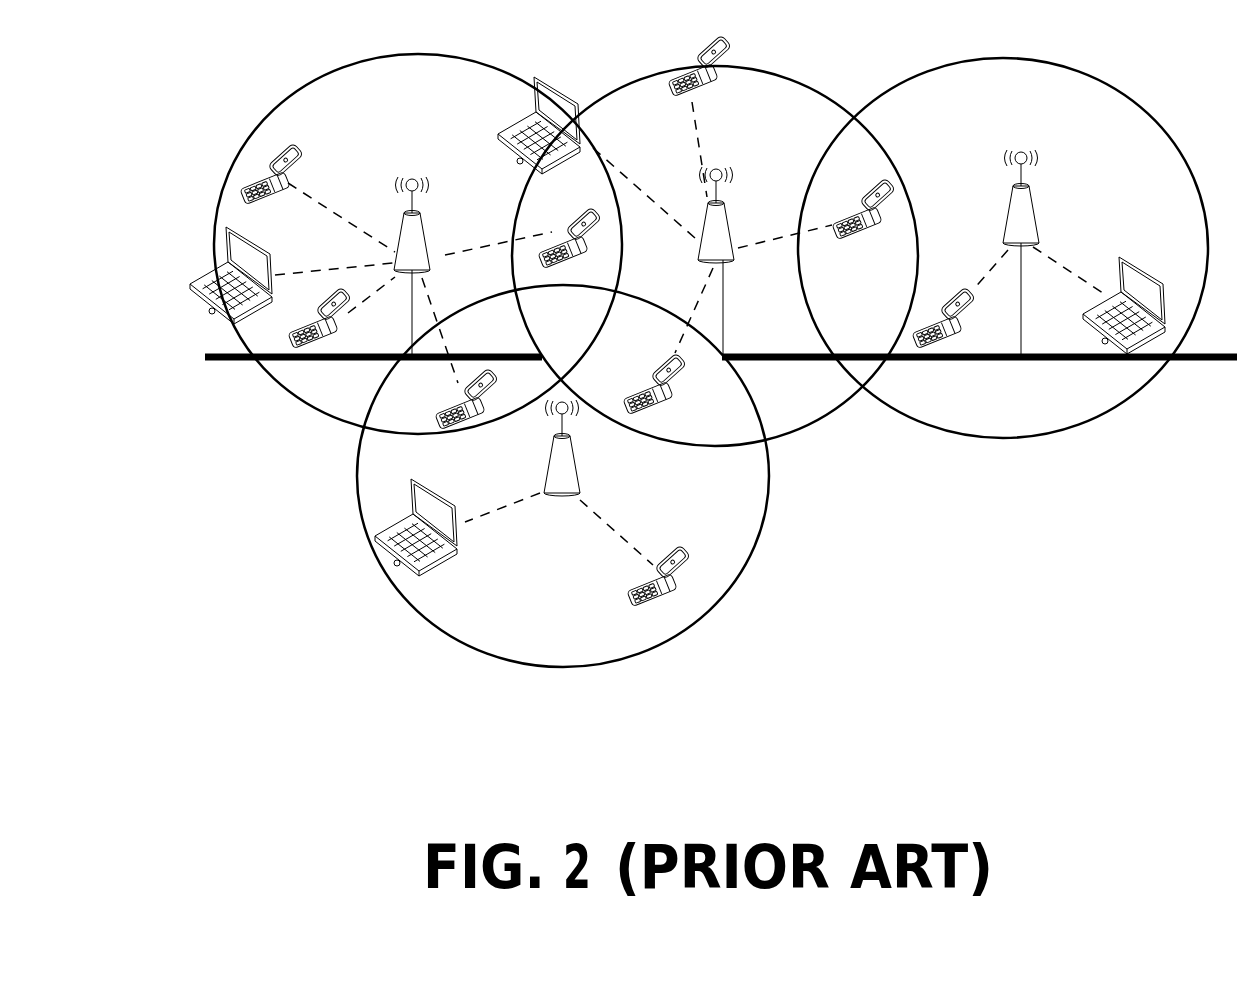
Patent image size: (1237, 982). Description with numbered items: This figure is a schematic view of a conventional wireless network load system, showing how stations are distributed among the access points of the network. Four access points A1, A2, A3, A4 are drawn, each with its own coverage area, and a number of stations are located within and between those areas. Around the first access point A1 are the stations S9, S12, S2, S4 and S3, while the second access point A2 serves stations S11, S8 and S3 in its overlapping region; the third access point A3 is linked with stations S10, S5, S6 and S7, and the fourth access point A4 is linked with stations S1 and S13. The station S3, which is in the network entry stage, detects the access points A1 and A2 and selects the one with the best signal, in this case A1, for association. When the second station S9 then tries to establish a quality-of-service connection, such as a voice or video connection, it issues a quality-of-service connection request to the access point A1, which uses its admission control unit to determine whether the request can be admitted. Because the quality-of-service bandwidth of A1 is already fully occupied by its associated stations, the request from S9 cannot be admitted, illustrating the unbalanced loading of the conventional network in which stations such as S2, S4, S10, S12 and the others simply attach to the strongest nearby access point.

The access point A1 is at (413, 251).
The access point A2 is at (564, 468).
The access point A3 is at (733, 262).
The access point A4 is at (1021, 237).
The station S1 is at (951, 317).
The station S2 is at (325, 319).
The station S3 is at (458, 397).
The station S4 is at (571, 245).
The station S5 is at (700, 77).
The station S6 is at (864, 226).
The station S7 is at (658, 394).
The station S8 is at (659, 591).
The station S9 is at (272, 184).
The station S10 is at (526, 130).
The station S11 is at (417, 542).
The station S12 is at (210, 277).
The station S13 is at (1130, 293).